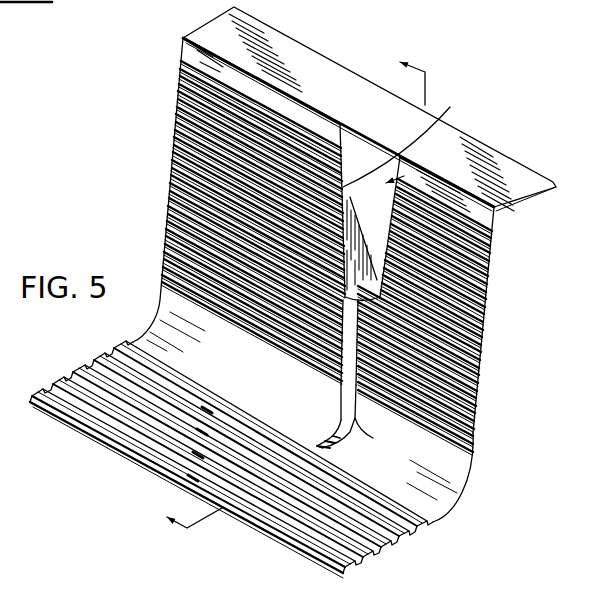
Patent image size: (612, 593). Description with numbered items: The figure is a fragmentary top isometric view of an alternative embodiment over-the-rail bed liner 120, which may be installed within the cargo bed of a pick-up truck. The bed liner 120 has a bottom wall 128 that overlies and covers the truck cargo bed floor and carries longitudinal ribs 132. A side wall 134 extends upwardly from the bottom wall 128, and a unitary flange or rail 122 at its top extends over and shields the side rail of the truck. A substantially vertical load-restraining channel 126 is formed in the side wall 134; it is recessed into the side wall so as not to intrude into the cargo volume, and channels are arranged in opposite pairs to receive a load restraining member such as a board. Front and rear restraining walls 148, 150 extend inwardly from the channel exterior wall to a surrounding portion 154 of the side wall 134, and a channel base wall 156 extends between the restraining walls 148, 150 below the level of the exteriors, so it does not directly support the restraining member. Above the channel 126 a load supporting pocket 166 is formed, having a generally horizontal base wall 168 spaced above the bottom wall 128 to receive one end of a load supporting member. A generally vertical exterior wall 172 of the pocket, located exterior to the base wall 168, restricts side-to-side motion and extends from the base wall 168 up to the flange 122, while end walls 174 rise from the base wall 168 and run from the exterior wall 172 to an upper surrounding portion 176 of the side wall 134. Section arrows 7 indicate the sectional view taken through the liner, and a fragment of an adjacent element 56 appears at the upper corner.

The adjacent component edge 56 is at (50, 0).
The over-the-rail bed liner 120 is at (135, 180).
The flanges or rails 122 is at (514, 166).
The side wall 134 is at (172, 143).
The upper surrounding portion 176 is at (295, 110).
The exterior wall 172 is at (358, 145).
The end walls 174 is at (432, 113).
The load supporting pocket 166 is at (462, 133).
The pocket base wall 168 is at (484, 310).
The surrounding portion 154 is at (340, 326).
The load-restraining channel 126 is at (343, 363).
The front restraining wall 148 is at (340, 400).
The rear restraining wall 150 is at (352, 433).
The channel base wall 156 is at (343, 450).
The bottom wall 128 is at (428, 522).
The longitudinal ribs 132 is at (383, 547).
The section line 7- 7 is at (306, 305).